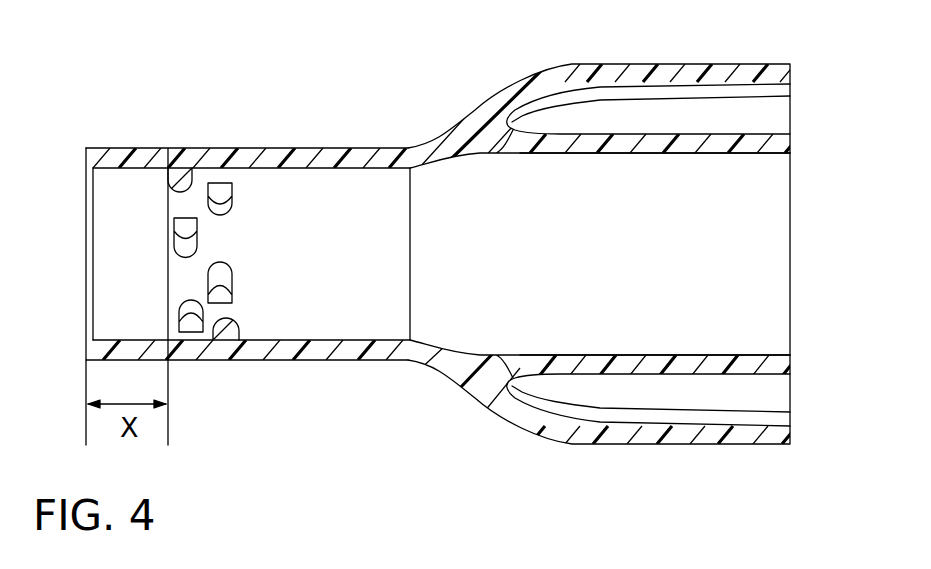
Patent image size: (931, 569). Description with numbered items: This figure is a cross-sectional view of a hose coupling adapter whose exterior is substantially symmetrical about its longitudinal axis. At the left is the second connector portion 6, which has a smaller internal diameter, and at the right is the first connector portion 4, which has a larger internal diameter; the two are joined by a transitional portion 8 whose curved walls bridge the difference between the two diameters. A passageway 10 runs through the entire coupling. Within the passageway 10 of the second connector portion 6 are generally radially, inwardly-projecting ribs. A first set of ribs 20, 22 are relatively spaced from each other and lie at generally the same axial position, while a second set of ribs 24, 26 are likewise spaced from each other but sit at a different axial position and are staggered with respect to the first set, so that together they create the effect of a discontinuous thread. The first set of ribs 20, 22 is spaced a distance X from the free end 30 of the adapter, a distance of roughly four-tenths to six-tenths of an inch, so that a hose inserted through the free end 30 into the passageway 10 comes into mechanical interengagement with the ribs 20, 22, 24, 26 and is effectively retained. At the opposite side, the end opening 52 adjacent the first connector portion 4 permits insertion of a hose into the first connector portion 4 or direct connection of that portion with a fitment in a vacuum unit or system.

The first connector portion 4 is at (703, 64).
The second connector portion 6 is at (126, 148).
The transitional portion 8 is at (462, 118).
The passageway 10 is at (742, 285).
The rib 20 is at (173, 243).
The rib 22 is at (179, 318).
The rib 24 is at (233, 198).
The rib 26 is at (233, 280).
The free end 30 is at (93, 212).
The end opening 52 is at (792, 217).